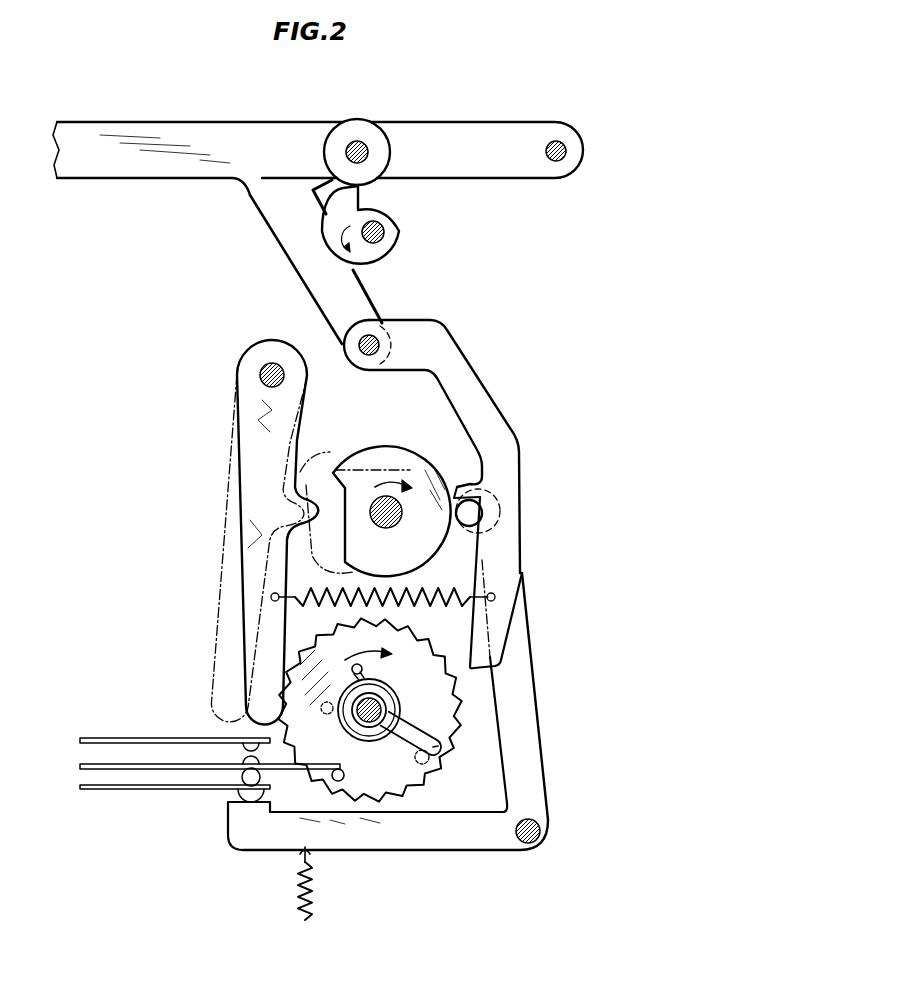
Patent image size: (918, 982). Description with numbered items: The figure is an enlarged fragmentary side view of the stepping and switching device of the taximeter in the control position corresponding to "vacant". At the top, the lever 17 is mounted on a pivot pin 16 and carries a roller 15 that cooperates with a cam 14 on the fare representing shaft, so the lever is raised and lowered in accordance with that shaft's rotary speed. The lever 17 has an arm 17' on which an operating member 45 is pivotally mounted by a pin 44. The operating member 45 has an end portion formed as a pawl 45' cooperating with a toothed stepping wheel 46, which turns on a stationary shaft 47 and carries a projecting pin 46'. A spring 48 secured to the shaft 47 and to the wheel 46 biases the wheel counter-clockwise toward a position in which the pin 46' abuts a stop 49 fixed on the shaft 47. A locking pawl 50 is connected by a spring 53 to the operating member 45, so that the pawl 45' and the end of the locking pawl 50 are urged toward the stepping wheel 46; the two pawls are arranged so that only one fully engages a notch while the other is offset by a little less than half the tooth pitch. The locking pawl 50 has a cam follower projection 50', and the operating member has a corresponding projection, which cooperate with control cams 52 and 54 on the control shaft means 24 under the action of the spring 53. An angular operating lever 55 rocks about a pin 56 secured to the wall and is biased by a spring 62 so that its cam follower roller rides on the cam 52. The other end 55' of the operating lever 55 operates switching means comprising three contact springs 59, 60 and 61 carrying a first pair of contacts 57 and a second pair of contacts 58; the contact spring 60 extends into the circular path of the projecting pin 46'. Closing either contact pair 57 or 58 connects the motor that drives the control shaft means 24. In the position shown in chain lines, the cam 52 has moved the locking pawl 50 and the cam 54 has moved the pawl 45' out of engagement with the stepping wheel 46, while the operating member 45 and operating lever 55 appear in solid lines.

The cam 14 is at (390, 228).
The roller 15 is at (367, 133).
The pivot pin 16 is at (567, 150).
The lever 17 is at (318, 145).
The arm 17' is at (316, 262).
The control shaft means 24 is at (400, 523).
The pin 44 is at (375, 340).
The operating member 45 is at (432, 446).
The pawl portion 45' is at (524, 583).
The stepping wheel 46 is at (374, 709).
The projecting pin 46' is at (391, 781).
The shaft 47 is at (406, 714).
The spring 48 is at (400, 698).
The stop 49 is at (438, 746).
The locking pawl 50 is at (253, 532).
The cam follower projection 50' is at (305, 532).
The control cam 52 is at (410, 599).
The spring 53 is at (383, 614).
The control cam 54 is at (352, 500).
The operating lever 55 is at (395, 726).
The end of operating lever 55' is at (230, 834).
The pin 56 is at (543, 830).
The first pair of contacts 57 is at (243, 779).
The second pair of contacts 58 is at (246, 753).
The contact spring 59 is at (138, 741).
The contact spring 60 is at (82, 766).
The contact spring 61 is at (100, 789).
The spring 62 is at (311, 910).